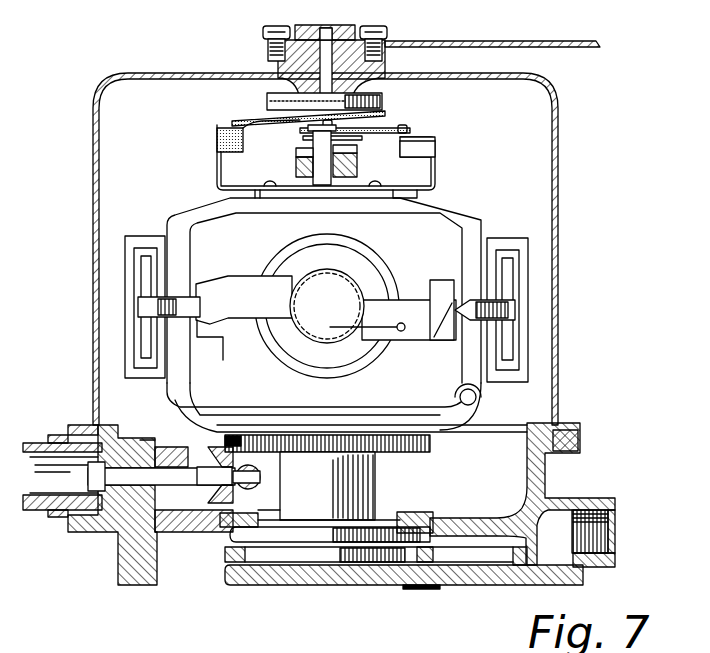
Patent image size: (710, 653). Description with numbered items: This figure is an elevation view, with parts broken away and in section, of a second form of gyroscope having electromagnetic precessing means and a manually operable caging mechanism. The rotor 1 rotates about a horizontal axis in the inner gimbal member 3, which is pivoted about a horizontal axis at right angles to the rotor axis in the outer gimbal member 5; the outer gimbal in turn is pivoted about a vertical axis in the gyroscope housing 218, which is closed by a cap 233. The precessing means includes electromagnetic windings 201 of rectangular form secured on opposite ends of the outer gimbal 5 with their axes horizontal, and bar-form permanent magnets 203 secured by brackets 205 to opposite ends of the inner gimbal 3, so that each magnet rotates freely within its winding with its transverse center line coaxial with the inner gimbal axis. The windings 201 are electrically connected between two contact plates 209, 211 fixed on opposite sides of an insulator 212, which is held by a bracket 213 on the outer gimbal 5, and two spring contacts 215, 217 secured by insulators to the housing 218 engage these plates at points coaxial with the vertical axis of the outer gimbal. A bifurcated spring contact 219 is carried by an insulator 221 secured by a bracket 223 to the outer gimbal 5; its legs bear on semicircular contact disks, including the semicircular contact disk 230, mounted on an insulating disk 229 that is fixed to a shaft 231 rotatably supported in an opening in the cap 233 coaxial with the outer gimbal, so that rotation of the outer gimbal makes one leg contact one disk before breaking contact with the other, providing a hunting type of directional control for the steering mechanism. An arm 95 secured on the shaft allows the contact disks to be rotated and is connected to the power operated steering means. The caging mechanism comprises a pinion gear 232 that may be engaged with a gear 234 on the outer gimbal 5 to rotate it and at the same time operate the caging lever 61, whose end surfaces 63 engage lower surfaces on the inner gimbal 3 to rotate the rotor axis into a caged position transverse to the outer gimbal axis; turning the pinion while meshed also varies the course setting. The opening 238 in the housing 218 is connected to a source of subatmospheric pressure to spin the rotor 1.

The rotor 1 is at (378, 270).
The inner gimbal member 3 is at (245, 292).
The outer gimbal member 5 is at (168, 375).
The caging lever 61 is at (469, 408).
The surfaces 63 is at (215, 346).
The arm 95 is at (596, 47).
The electromagnetic windings 201 is at (150, 240).
The permanent magnets 203 is at (148, 290).
The brackets 205 is at (148, 312).
The contact plate 209 is at (355, 128).
The contact plate 211 is at (300, 155).
The insulator 212 is at (410, 137).
The bracket 213 is at (435, 172).
The spring contact 215 is at (305, 137).
The spring contact 217 is at (348, 160).
The housing 218 is at (580, 450).
The bifurcated spring contact 219 is at (265, 113).
The insulator 221 is at (222, 130).
The bracket 223 is at (215, 172).
The insulating disk 229 is at (372, 94).
The semicircular contact disk 230 is at (285, 100).
The shaft 231 is at (345, 33).
The pinion gear 232 is at (214, 505).
The cap 233 is at (558, 140).
The gear 234 is at (415, 452).
The opening 238 is at (615, 520).